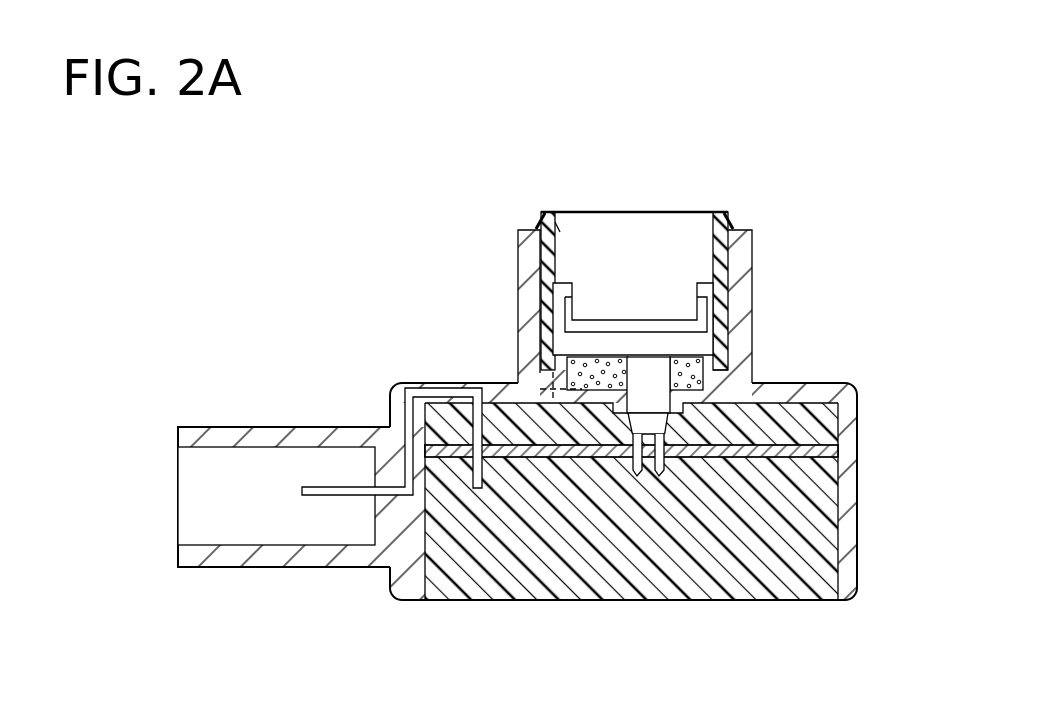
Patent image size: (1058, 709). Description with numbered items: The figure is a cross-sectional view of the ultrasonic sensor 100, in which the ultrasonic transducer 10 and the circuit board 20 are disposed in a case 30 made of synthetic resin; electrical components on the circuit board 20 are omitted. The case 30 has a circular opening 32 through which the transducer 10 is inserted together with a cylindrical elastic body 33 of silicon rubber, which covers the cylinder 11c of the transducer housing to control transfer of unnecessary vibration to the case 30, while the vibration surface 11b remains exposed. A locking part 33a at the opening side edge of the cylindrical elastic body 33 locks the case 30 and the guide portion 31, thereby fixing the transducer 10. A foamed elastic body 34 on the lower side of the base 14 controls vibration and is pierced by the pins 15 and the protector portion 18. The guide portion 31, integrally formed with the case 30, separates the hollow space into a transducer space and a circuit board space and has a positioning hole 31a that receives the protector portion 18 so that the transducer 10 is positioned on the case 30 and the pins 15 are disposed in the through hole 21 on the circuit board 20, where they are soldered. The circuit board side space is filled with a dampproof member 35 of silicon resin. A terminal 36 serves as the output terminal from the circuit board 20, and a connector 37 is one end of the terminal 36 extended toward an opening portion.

The ultrasonic sensor 100 is at (874, 235).
The ultrasonic transducer 10 is at (699, 197).
The vibration surface 11b is at (607, 212).
The cylinder 11c is at (565, 228).
The opening 32 is at (652, 212).
The cylindrical elastic body 33 is at (720, 257).
The locking part 33a is at (730, 214).
The foamed elastic body 34 is at (727, 355).
The base 14 is at (567, 343).
The protector portion 18 is at (657, 382).
The through hole 21 is at (665, 455).
The pins 15 is at (637, 476).
The guide portion 31 is at (550, 388).
The positioning hole 31a is at (540, 457).
The case 30 is at (862, 372).
The dampproof member 35 is at (775, 568).
The circuit board 20 is at (812, 457).
The terminal 36 is at (340, 487).
The connector 37 is at (237, 426).